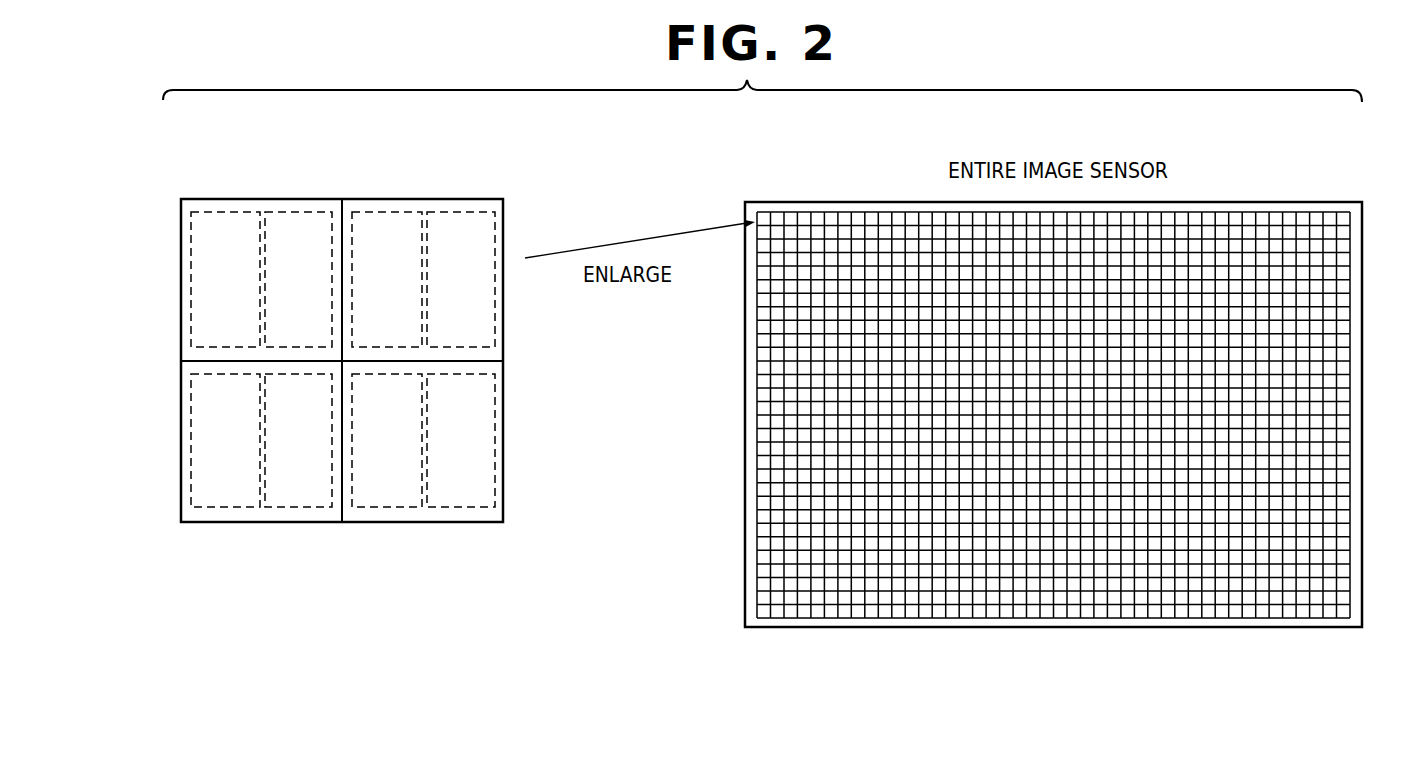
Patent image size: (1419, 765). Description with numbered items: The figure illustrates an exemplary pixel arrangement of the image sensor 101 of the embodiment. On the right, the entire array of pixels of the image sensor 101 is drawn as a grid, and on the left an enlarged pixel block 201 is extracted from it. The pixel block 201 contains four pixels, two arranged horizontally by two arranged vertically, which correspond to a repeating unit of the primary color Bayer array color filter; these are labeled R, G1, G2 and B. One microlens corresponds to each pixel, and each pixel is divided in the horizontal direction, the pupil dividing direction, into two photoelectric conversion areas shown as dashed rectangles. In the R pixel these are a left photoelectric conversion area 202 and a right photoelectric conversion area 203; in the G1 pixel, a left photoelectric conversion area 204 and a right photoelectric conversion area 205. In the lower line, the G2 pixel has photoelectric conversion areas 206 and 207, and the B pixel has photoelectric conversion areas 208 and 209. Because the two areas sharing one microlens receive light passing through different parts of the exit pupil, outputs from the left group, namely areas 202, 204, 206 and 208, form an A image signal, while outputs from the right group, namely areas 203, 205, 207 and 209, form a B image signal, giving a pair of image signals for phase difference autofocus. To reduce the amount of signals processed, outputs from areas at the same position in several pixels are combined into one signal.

The image sensor 101 is at (1282, 203).
The pixel block 201 is at (488, 199).
The photoelectric conversion area 202 is at (226, 225).
The photoelectric conversion area 203 is at (298, 225).
The photoelectric conversion area 204 is at (382, 225).
The photoelectric conversion area 205 is at (457, 225).
The photoelectric conversion area 206 is at (225, 495).
The photoelectric conversion area 207 is at (298, 495).
The photoelectric conversion area 208 is at (381, 495).
The photoelectric conversion area 209 is at (454, 495).